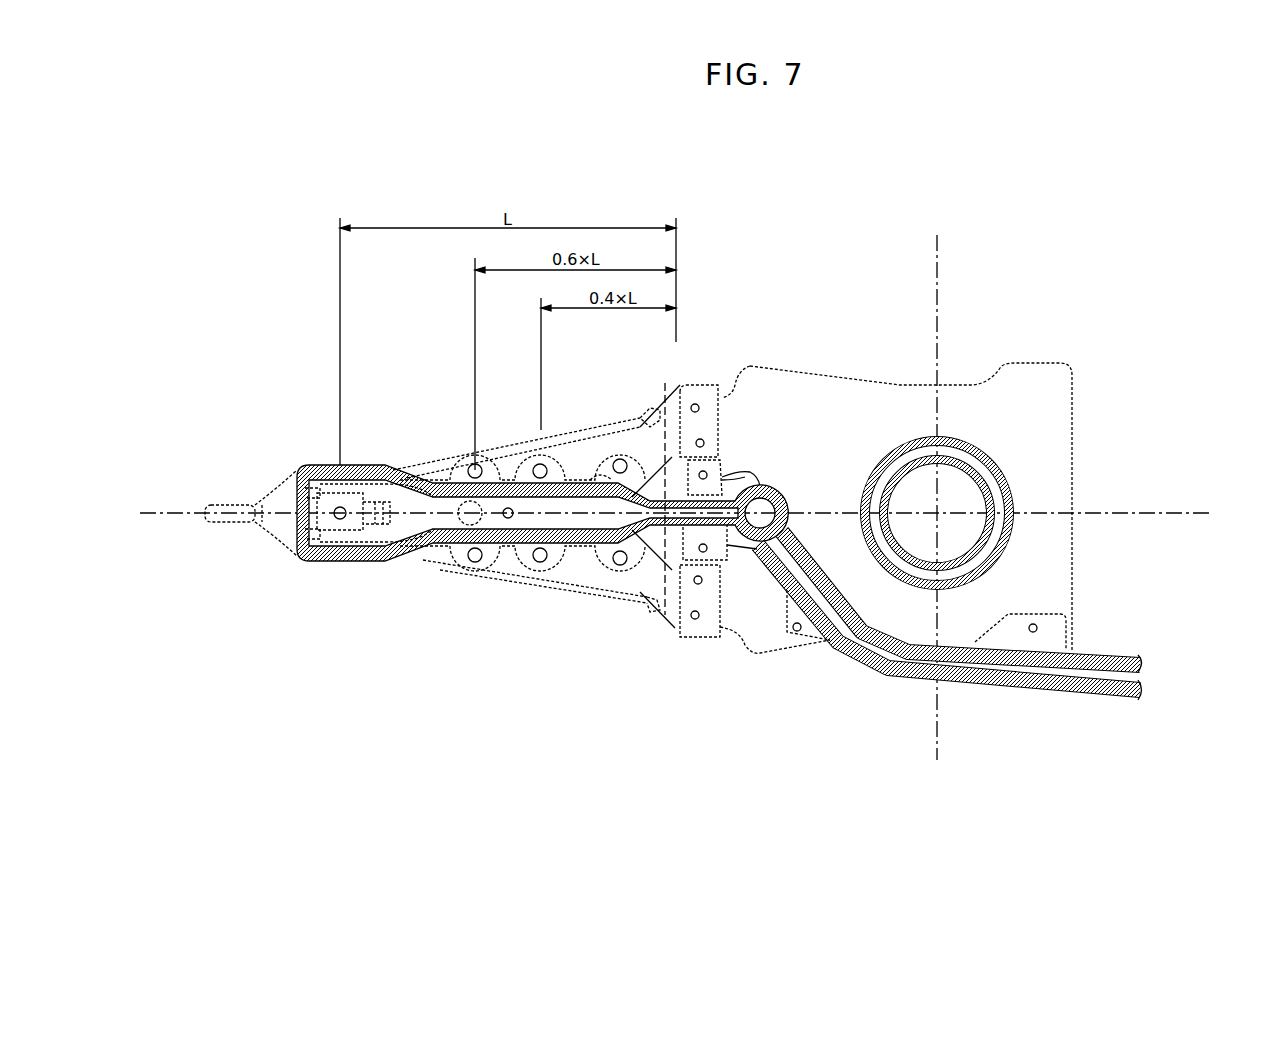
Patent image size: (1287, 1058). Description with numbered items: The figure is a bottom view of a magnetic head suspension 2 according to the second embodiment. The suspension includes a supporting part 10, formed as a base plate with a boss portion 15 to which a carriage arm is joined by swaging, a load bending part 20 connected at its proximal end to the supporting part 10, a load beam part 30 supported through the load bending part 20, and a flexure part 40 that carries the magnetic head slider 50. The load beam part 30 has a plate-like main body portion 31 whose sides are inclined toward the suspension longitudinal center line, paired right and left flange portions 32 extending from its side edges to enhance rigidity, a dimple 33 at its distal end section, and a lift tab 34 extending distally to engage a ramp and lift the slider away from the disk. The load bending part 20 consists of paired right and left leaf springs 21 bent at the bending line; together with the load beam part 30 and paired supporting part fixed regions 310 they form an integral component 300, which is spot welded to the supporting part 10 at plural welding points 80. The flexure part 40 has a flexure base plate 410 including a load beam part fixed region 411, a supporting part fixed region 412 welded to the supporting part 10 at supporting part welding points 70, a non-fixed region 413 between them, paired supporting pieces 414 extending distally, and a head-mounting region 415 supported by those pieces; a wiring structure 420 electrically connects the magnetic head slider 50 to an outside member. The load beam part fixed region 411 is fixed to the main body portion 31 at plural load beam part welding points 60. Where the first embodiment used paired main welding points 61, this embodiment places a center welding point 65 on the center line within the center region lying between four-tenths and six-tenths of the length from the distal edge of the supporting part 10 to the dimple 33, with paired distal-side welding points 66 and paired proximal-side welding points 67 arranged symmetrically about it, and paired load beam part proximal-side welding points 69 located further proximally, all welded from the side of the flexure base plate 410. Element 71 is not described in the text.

The magnetic head suspension 2 is at (1024, 290).
The supporting part 10 is at (1048, 431).
The boss portion 15 is at (975, 553).
The load bending part 20 is at (662, 524).
The leaf springs 21 is at (667, 398).
The load beam part 30 is at (525, 546).
The main body portion 31 is at (535, 583).
The flange portions 32 is at (412, 466).
The dimple 33 is at (312, 561).
The lift tab 34 is at (236, 505).
The flexure part 40 is at (575, 558).
The magnetic head slider 50 is at (343, 551).
The load beam part welding points 60 is at (491, 532).
The main welding points 61 is at (490, 448).
The center welding point 65 is at (487, 567).
The distal-side welding points 66 is at (472, 448).
The proximal-side welding points 67 is at (530, 448).
The load beam part proximal-side welding points 69 is at (618, 450).
The supporting part welding points 70 is at (1038, 628).
The arm bracket 71 is at (712, 476).
The welding points 80 is at (696, 404).
The component 300 is at (620, 606).
The supporting part fixed region 310 is at (742, 366).
The flexure base plate 410 is at (599, 565).
The load beam part fixed region 411 is at (588, 433).
The supporting part fixed region 412 is at (742, 478).
The non-fixed region 413 is at (712, 456).
The supporting pieces 414 is at (370, 465).
The head-mounting region 415 is at (339, 534).
The wiring structure 420 is at (437, 468).